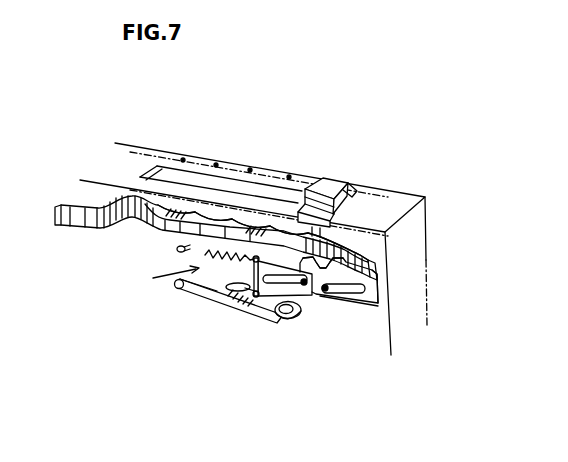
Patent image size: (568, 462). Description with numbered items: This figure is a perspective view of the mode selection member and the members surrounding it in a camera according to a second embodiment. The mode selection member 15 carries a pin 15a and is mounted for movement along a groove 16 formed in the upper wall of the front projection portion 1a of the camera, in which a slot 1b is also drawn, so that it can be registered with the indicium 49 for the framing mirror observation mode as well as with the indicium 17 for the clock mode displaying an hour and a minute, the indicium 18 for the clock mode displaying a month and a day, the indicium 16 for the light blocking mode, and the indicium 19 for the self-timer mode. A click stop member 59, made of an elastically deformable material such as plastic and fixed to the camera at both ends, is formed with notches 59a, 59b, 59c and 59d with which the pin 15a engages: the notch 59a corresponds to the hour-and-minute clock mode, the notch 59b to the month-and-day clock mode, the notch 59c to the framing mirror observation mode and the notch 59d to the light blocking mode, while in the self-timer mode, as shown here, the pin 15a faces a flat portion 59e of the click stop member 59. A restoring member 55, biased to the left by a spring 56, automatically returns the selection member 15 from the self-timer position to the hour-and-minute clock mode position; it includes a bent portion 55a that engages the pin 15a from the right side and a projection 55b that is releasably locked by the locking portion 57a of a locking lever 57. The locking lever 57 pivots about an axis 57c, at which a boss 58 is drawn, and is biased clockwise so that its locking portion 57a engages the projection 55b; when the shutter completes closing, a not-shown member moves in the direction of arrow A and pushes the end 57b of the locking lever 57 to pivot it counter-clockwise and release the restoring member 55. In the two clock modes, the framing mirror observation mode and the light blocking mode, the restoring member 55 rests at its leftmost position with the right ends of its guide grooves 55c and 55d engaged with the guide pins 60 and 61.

The front projection portion 1a is at (420, 286).
The slot in body 1b is at (157, 167).
The mode selection member 15 is at (320, 179).
The pin 15a is at (297, 293).
The groove 16 is at (183, 160).
The indicium 17 is at (289, 177).
The indicium 18 is at (250, 170).
The indicium 19 is at (350, 173).
The indicium 49 is at (216, 165).
The restoring member 55 is at (378, 296).
The bent portion 55a is at (336, 288).
The projection 55b is at (257, 297).
The guide groove 55c is at (360, 260).
The guide groove 55d is at (305, 285).
The spring 56 is at (205, 255).
The locking lever 57 is at (237, 292).
The locking portion 57a is at (216, 291).
The end 57b is at (177, 289).
The axis 57c is at (291, 318).
The boss 58 is at (279, 318).
The click stop member 59 is at (83, 228).
The notch 59a is at (270, 227).
The notch 59b is at (232, 219).
The notch 59c is at (195, 213).
The notch 59d is at (158, 205).
The flat portion 59e is at (352, 235).
The guide pin 60 is at (324, 290).
The guide pin 61 is at (253, 268).
The arrow A is at (163, 276).